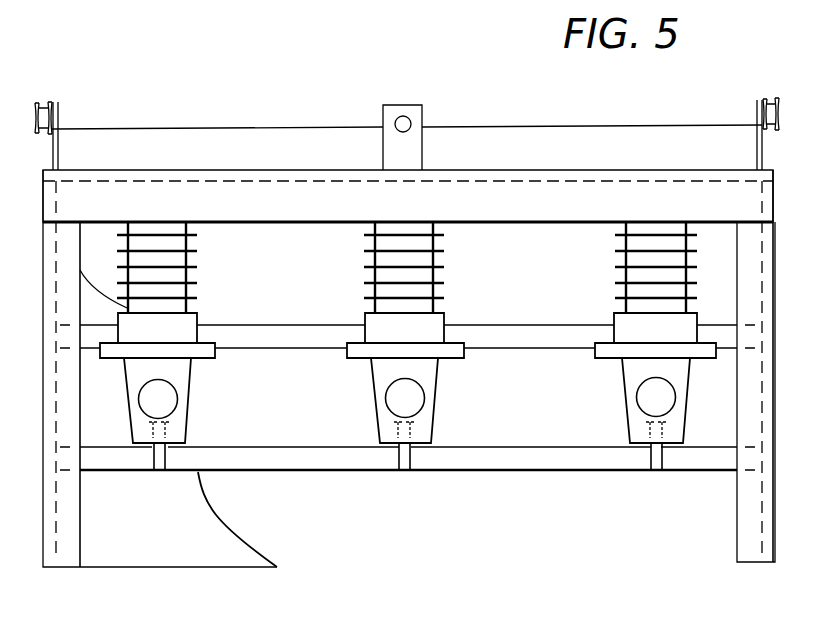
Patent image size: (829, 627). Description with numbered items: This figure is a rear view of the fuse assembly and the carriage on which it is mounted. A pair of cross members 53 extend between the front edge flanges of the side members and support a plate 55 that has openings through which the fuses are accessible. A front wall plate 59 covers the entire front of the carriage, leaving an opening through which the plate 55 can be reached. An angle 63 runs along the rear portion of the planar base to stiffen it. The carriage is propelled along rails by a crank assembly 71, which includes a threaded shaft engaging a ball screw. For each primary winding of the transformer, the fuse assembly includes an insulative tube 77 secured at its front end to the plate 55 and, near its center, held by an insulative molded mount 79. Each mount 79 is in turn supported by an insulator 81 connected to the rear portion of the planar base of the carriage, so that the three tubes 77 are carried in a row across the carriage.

The cross members 53 is at (297, 331).
The plate 55 is at (305, 440).
The front wall plate 59 is at (187, 558).
The angle 63 is at (224, 136).
The crank assembly 71 is at (383, 82).
The insulative tube 77 is at (173, 405).
The insulative molded mount 79 is at (191, 379).
The insulator 81 is at (192, 263).